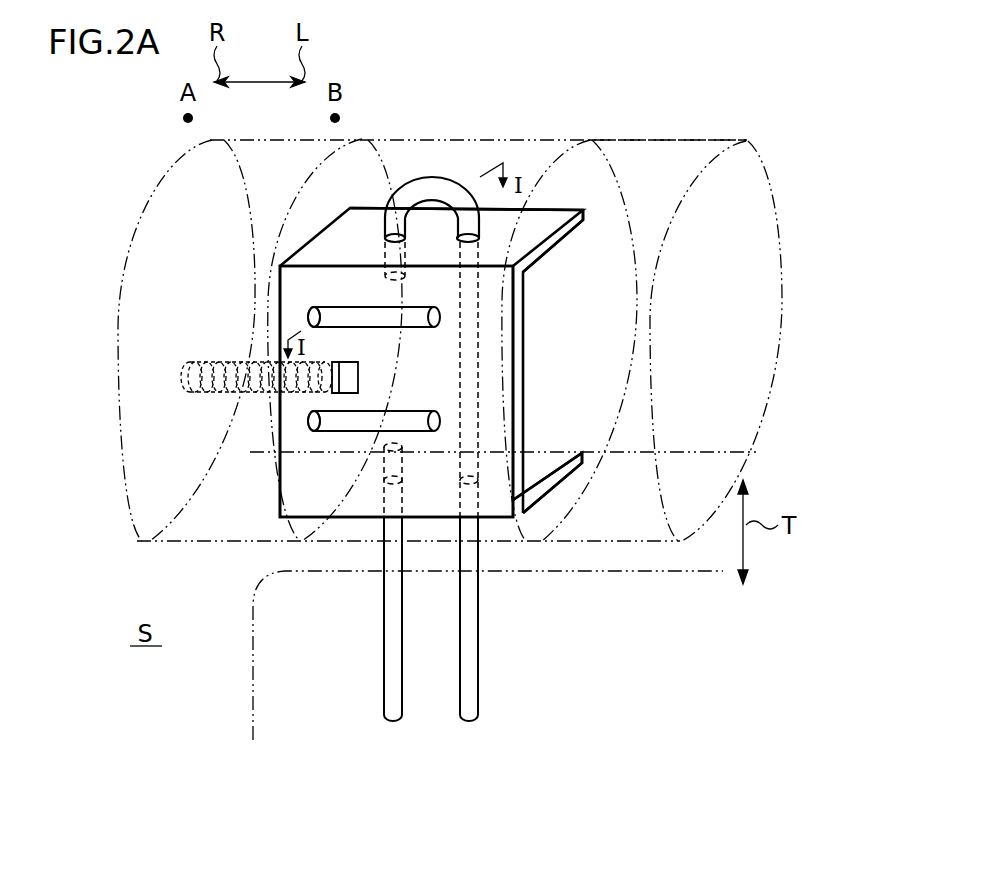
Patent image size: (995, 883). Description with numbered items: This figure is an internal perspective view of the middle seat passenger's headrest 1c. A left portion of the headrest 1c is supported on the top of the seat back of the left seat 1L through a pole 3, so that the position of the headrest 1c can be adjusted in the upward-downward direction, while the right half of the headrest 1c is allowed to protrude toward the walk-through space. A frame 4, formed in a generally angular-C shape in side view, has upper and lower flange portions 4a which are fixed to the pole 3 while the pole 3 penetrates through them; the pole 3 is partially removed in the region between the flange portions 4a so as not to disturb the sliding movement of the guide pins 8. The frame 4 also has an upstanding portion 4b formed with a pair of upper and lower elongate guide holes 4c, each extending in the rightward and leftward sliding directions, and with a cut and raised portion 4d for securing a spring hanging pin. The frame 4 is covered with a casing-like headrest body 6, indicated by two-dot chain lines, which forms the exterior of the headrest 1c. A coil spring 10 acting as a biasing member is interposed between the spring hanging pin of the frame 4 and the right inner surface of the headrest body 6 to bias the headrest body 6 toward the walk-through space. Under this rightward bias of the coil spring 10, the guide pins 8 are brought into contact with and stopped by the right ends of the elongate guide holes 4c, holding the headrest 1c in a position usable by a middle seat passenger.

The middle seat passenger's headrest 1c is at (690, 140).
The left seat 1L is at (246, 728).
The pole 3 is at (470, 666).
The frame 4 is at (524, 362).
The upper and lower flange portions 4a is at (545, 223).
The upstanding portion 4b is at (512, 495).
The elongate guide holes 4c is at (388, 418).
The cut and raised portion 4d is at (338, 375).
The headrest body 6 is at (791, 277).
The guide pins 8 is at (310, 313).
The coil spring 10 is at (176, 381).